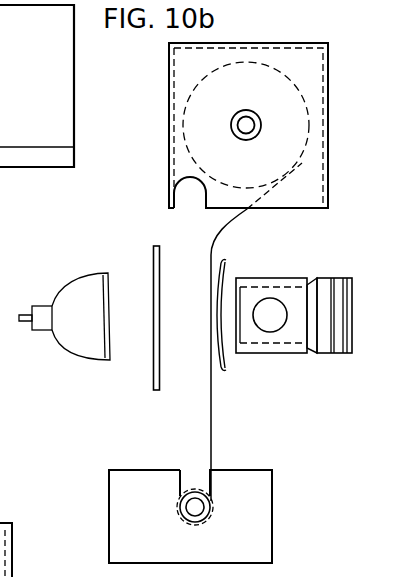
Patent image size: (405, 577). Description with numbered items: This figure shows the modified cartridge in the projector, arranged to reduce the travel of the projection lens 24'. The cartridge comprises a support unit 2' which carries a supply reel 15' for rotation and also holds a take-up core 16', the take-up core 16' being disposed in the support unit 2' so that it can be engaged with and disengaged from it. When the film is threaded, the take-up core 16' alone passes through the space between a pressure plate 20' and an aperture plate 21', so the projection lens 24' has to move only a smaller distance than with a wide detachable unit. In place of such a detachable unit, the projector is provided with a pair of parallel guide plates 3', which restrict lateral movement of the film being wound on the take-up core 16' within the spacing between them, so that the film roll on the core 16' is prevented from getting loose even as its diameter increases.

The support unit 2' is at (262, 125).
The supply reel 15' is at (260, 99).
The aperture plate 21' is at (176, 318).
The pressure plate 20' is at (240, 331).
The projection lens 24' is at (316, 320).
The pair of parallel guide plates 3' is at (203, 516).
The take-up core 16' is at (188, 480).